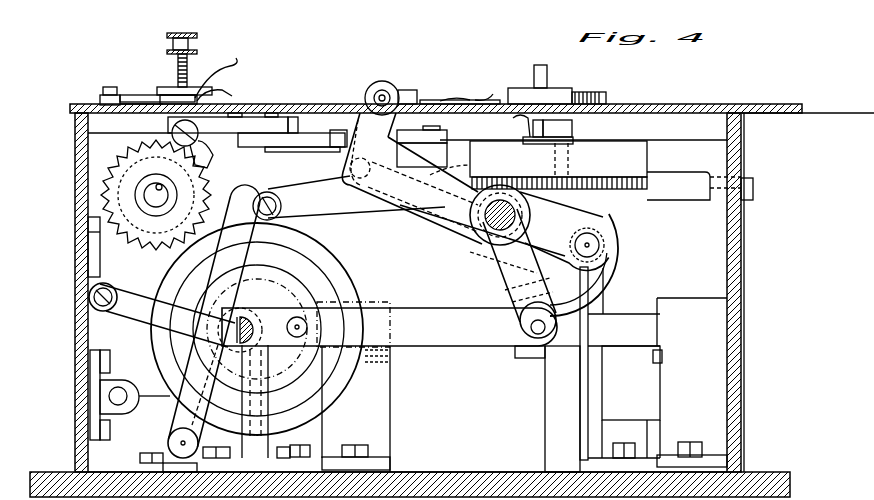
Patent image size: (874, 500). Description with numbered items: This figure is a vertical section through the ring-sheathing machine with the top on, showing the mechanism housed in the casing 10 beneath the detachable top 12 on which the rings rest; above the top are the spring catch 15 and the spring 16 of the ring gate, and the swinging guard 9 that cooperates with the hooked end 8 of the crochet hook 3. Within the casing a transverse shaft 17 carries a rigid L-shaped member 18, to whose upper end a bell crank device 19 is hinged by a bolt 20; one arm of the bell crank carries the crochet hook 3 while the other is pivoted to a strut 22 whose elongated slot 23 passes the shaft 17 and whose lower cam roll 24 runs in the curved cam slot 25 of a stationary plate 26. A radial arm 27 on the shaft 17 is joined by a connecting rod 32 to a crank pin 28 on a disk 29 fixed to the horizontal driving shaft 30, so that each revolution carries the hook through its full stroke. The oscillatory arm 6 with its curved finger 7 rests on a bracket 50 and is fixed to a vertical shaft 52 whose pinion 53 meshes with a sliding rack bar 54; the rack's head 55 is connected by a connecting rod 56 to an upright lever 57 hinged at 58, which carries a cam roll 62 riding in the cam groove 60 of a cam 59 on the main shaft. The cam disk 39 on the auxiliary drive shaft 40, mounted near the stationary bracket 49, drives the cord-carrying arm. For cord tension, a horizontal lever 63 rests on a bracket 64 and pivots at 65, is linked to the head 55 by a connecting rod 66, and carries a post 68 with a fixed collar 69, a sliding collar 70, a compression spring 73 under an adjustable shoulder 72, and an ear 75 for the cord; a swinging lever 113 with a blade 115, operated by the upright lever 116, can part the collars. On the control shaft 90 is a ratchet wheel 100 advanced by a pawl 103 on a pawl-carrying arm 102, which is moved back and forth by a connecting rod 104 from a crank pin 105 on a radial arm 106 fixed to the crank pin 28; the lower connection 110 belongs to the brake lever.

The crochet hook 3 is at (430, 100).
The oscillatory arm 6 is at (573, 138).
The curved finger 7 is at (515, 129).
The hooked end 8 is at (490, 97).
The swinging guard 9 is at (455, 100).
The casing 10 is at (744, 250).
The detachable top 12 is at (695, 103).
The spring catch 15 is at (548, 70).
The spring 16 is at (595, 91).
The transverse shaft 17 is at (452, 234).
The L-shaped member 18 is at (435, 215).
The bell crank device 19 is at (405, 90).
The bolt 20 is at (380, 98).
The strut 22 is at (395, 205).
The elongated slot 23 is at (482, 250).
The cam roll 24 is at (578, 257).
The cam slot 25 is at (618, 272).
The stationary plate 26 is at (656, 238).
The radial arm 27 is at (500, 272).
The crank pin 28 is at (310, 327).
The disk 29 is at (283, 282).
The driving shaft 30 is at (257, 327).
The connecting rod 32 is at (389, 324).
The cam disk 39 is at (556, 372).
The auxiliary drive shaft 40 is at (637, 347).
The stationary bracket 49 is at (540, 96).
The bracket 50 is at (660, 150).
The vertical shaft 52 is at (578, 162).
The pinion 53 is at (605, 177).
The rack bar 54 is at (652, 188).
The head 55 is at (468, 166).
The connecting rod 56 is at (349, 198).
The upright lever 57 is at (215, 316).
The hinge 58 is at (175, 441).
The cam 59 is at (342, 274).
The cam groove 60 is at (330, 262).
The cam roll 62 is at (200, 385).
The horizontal lever 63 is at (293, 117).
The stationary bracket 64 is at (130, 124).
The pivotal connection 65 is at (246, 116).
The connecting rod 66 is at (315, 139).
The post 68 is at (175, 36).
The collar 69 is at (210, 90).
The collar 70 is at (222, 74).
The adjustable shoulder 72 is at (197, 51).
The compression spring 73 is at (178, 70).
The ear 75 is at (235, 92).
The control shaft 90 is at (170, 196).
The ratchet wheel 100 is at (208, 185).
The pawl-carrying arm 102 is at (117, 261).
The pawl 103 is at (215, 155).
The link 104 is at (162, 315).
The crank pin 105 is at (245, 318).
The radial arm 106 is at (300, 348).
The lower connection 110 is at (108, 395).
The swinging lever 113 is at (142, 103).
The blade 115 is at (130, 95).
The upright lever 116 is at (105, 88).